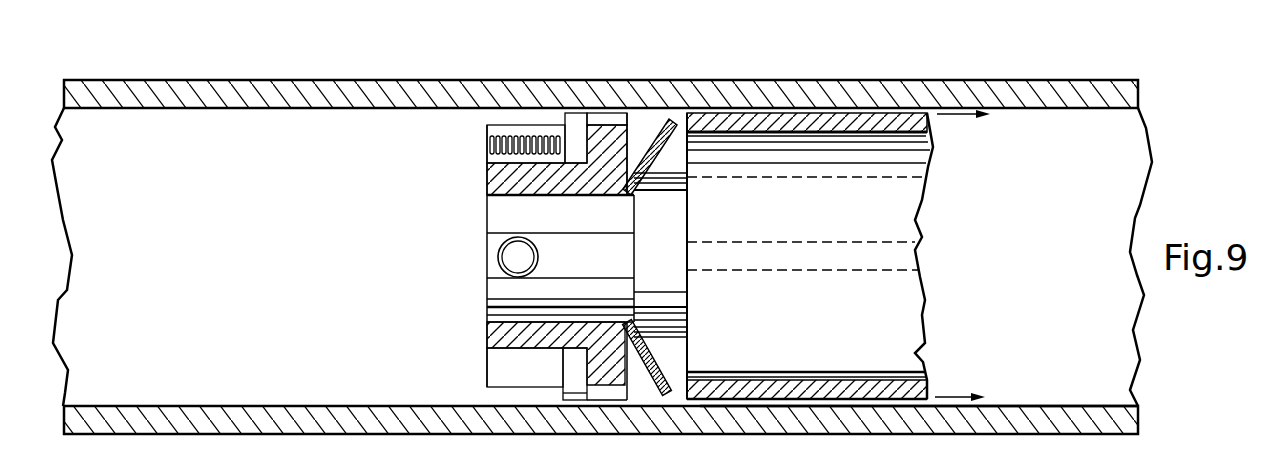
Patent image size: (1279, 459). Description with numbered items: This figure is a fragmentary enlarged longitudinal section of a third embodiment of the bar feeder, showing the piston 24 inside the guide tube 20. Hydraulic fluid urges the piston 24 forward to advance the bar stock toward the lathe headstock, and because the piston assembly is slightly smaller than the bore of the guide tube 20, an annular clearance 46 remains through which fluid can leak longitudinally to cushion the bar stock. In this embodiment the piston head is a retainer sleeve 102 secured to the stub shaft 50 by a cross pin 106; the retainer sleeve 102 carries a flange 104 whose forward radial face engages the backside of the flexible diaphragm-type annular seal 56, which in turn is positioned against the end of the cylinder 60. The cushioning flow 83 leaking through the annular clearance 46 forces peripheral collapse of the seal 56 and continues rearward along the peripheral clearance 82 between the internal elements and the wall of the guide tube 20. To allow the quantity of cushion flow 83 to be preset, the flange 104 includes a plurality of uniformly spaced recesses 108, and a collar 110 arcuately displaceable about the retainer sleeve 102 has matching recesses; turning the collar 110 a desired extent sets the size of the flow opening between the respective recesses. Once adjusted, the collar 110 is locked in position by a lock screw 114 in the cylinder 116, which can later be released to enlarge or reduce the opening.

The guide tube 20 is at (670, 92).
The piston 24 is at (519, 110).
The annular clearance 46 is at (567, 400).
The stub shaft 50 is at (498, 210).
The annular seal 56 is at (655, 382).
The cylinder 60 is at (826, 113).
The peripheral clearance 82 is at (857, 408).
The cushioning flow 83 is at (947, 396).
The retainer sleeve 102 is at (487, 180).
The flange 104 is at (603, 128).
The cross pin 106 is at (512, 259).
The recesses 108 is at (618, 117).
The collar 110 is at (577, 128).
The lock screw 114 is at (487, 148).
The cylinder 116 is at (507, 365).